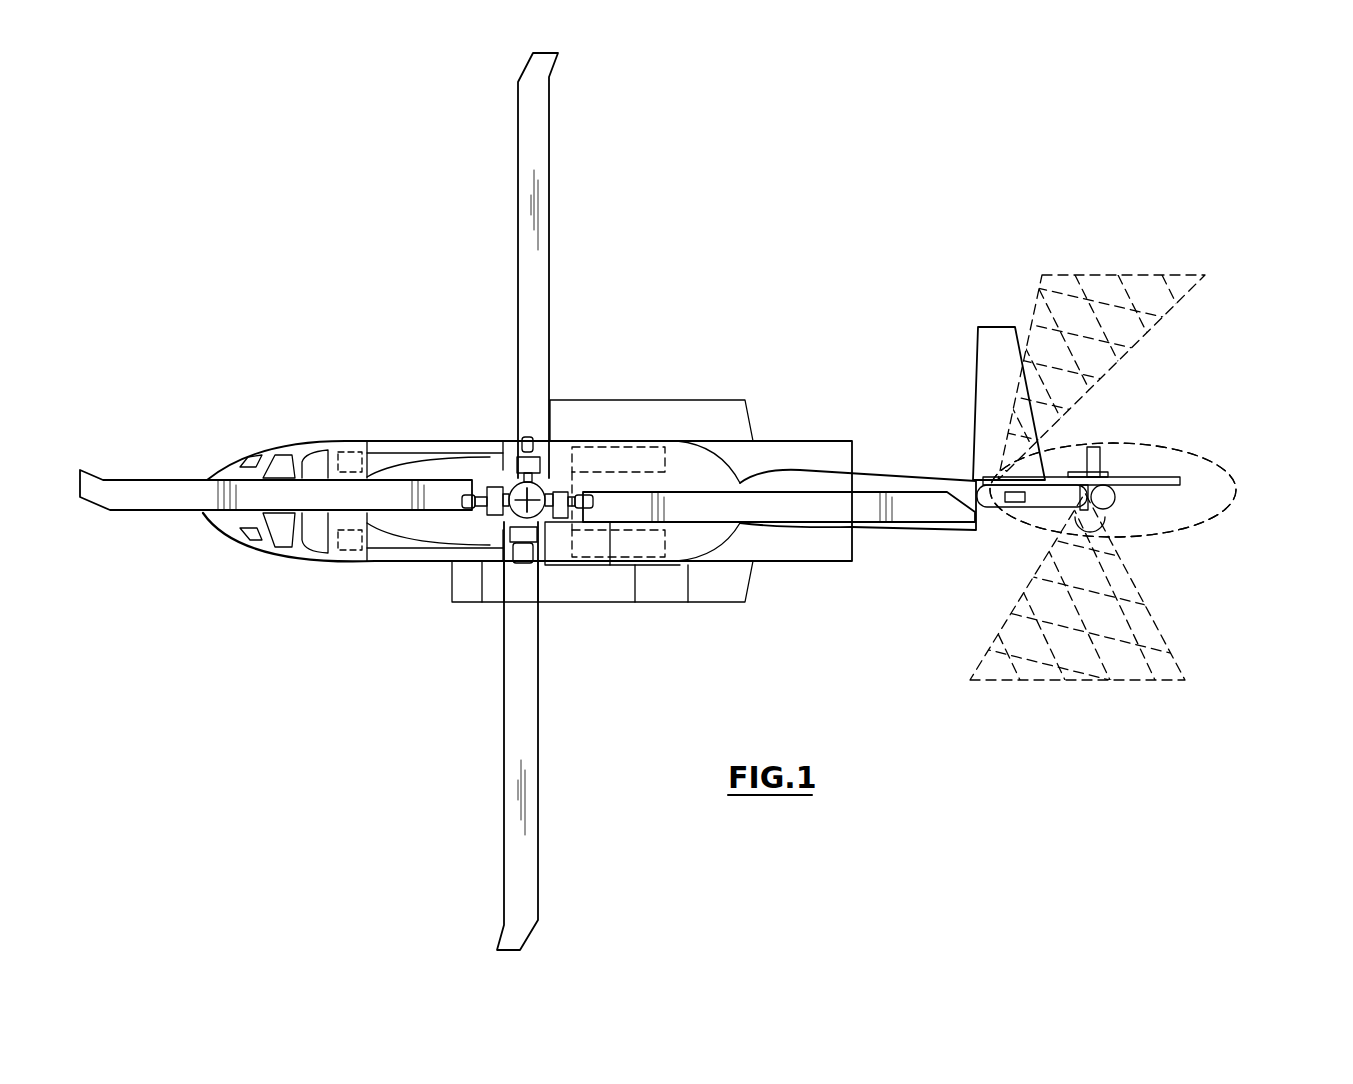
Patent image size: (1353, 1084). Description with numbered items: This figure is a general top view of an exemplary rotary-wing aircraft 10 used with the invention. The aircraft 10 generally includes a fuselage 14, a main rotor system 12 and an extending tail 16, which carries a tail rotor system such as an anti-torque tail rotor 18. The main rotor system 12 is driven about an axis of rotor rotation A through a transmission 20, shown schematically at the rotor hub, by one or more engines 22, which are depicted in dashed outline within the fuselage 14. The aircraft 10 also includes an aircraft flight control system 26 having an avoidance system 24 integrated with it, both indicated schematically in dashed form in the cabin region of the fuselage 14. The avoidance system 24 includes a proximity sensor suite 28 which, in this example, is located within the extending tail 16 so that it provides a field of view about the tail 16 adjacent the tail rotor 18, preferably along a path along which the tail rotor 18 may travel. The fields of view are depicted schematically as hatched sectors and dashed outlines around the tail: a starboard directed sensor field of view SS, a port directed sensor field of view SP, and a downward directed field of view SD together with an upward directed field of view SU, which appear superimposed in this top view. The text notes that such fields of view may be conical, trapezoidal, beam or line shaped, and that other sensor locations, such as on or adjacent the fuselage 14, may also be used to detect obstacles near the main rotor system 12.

The rotary-wing aircraft 10 is at (790, 298).
The main rotor system 12 is at (537, 395).
The fuselage 14 is at (405, 530).
The extending tail 16 is at (822, 480).
The anti-torque tail rotor 18 is at (1158, 477).
The transmission 20 is at (500, 465).
The engine 22 is at (632, 547).
The avoidance system 24 is at (350, 552).
The aircraft flight control system 26 is at (358, 452).
The proximity sensor suite 28 is at (960, 602).
The axis of rotor rotation A is at (530, 497).
The starboard directed sensor field of view SS is at (1097, 275).
The port directed sensor field of view SP is at (1093, 680).
The downward directed field of view SD is at (1228, 528).
The upward directed field of view SU is at (1113, 490).